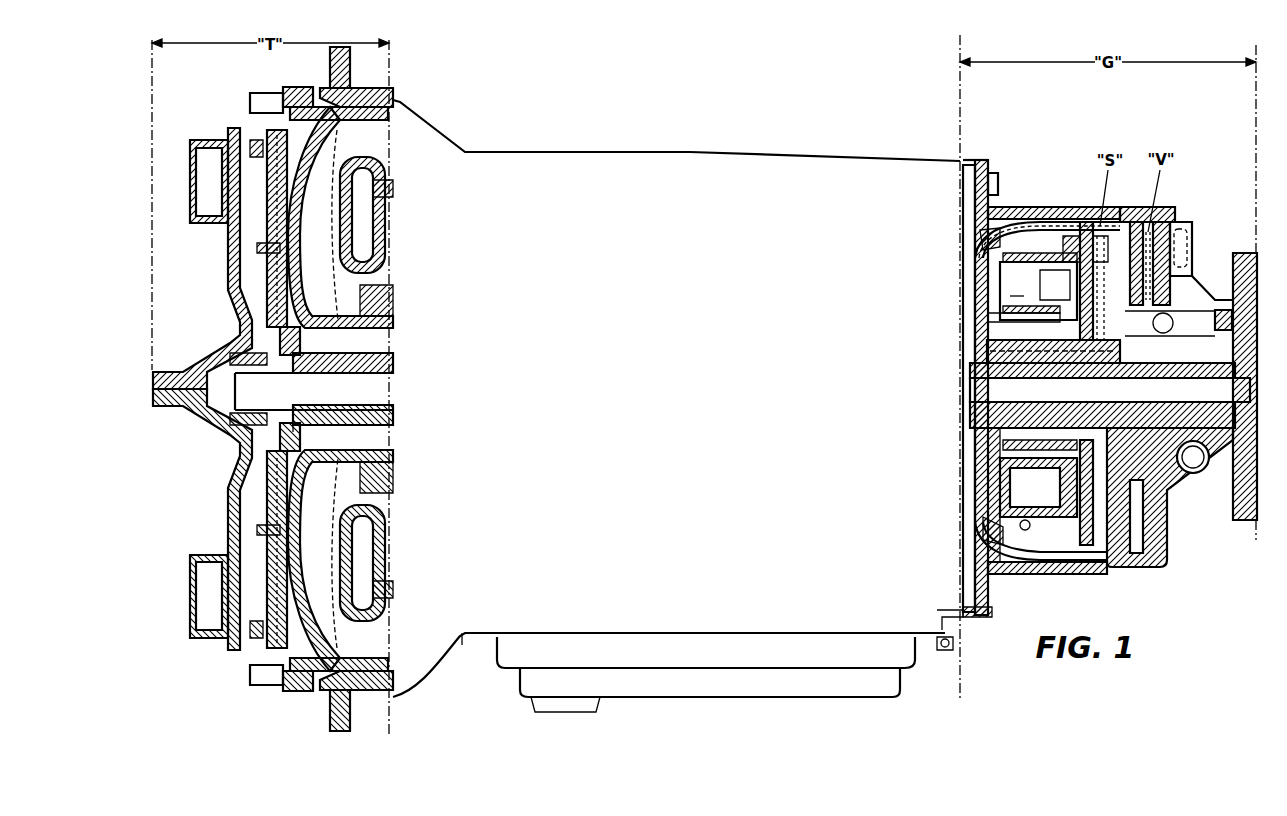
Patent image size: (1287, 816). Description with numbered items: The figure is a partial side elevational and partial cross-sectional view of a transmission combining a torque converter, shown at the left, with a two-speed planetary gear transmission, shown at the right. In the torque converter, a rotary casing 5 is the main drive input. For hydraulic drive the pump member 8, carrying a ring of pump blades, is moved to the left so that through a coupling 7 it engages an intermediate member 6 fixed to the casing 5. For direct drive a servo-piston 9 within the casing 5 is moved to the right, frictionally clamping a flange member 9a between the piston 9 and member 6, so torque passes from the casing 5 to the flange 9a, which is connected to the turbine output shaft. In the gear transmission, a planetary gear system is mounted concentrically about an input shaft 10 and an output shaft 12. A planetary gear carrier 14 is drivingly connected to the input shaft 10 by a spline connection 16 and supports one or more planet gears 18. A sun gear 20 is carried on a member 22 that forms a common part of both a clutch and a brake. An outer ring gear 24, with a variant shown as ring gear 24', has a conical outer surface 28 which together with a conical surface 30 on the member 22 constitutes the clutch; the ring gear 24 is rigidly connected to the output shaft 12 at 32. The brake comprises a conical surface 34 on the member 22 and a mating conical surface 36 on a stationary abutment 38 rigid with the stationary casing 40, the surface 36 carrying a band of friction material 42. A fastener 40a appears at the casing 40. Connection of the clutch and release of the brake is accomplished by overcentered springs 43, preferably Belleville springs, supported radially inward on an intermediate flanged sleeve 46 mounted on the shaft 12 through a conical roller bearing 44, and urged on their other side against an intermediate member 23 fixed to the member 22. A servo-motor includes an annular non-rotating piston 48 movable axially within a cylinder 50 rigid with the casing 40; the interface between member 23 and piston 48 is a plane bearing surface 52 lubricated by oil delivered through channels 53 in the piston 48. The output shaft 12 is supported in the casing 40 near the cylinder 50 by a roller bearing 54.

The rotary casing 5 is at (228, 141).
The intermediate member 6 is at (345, 100).
The coupling 7 is at (330, 118).
The pump member 8 is at (318, 206).
The servo-piston 9 is at (232, 243).
The flange member 9a is at (250, 118).
The input shaft 10 is at (965, 426).
The output shaft 12 is at (1240, 272).
The planetary gear carrier 14 is at (1020, 502).
The spline connection 16 is at (976, 351).
The planet gear 18 is at (1003, 257).
The sun gear 20 is at (990, 316).
The member 22 is at (1000, 283).
The intermediate member 23 is at (1118, 560).
The outer ring gear 24 is at (1074, 208).
The clutch plate 24' is at (1091, 263).
The conical outer surface 28 is at (1035, 210).
The conical surface 30 is at (983, 516).
The connection 32 is at (1095, 394).
The conical surface 34 is at (1024, 236).
The conical surface 36 is at (966, 229).
The stationary abutment 38 is at (965, 203).
The stationary casing 40 is at (943, 164).
The flange bolt 40a is at (975, 165).
The band of friction material 42 is at (998, 236).
The overcentered springs 43 is at (1090, 570).
The conical roller bearing 44 is at (1143, 363).
The intermediate flanged sleeve 46 is at (1135, 357).
The annular non-rotating piston 48 is at (1160, 530).
The cylinder 50 is at (1160, 252).
The plane bearing surface 52 is at (1120, 245).
The channels 53 is at (1190, 235).
The roller bearing 54 is at (1218, 316).